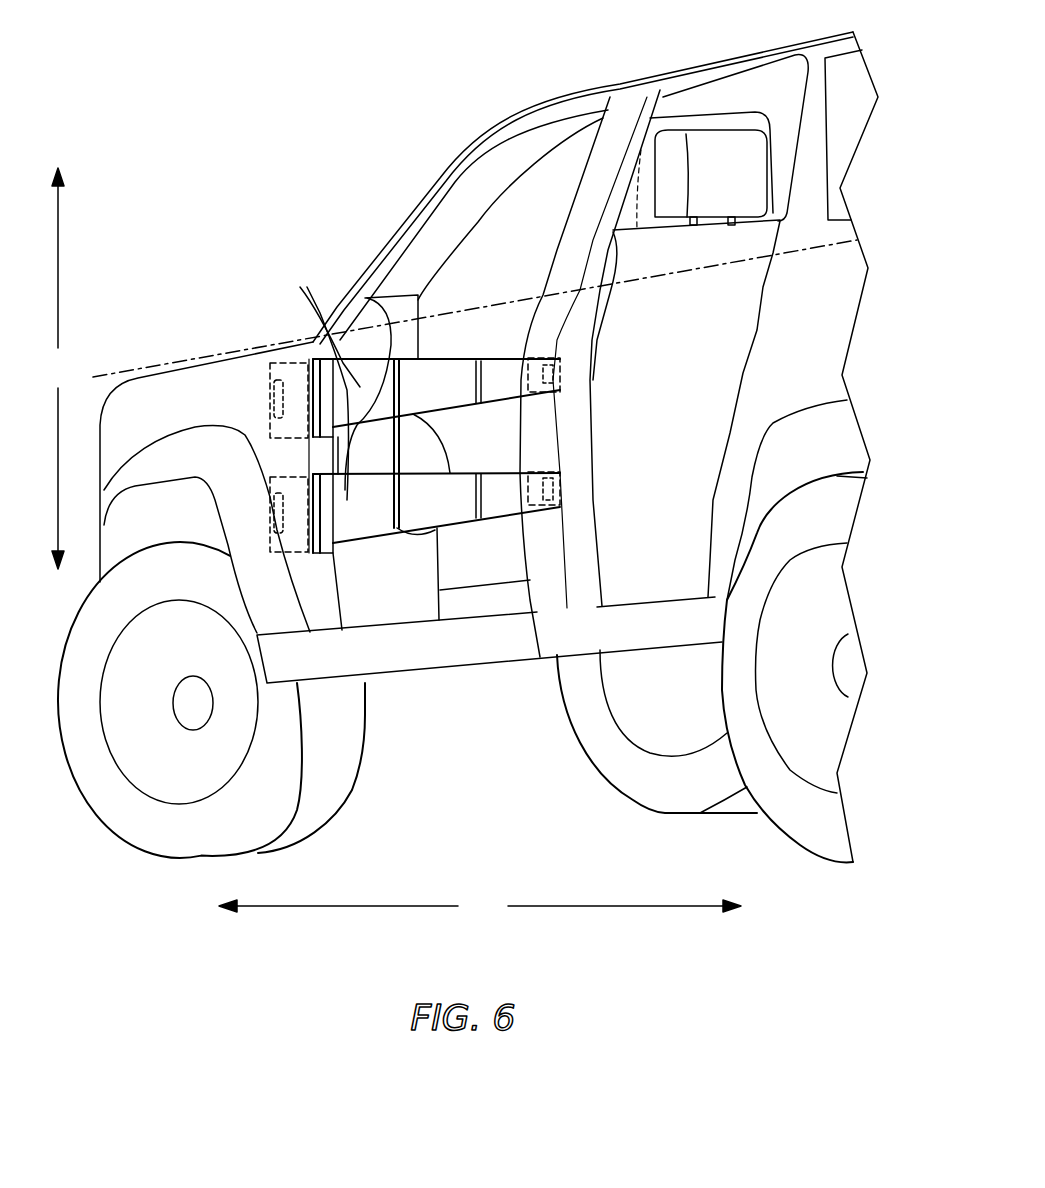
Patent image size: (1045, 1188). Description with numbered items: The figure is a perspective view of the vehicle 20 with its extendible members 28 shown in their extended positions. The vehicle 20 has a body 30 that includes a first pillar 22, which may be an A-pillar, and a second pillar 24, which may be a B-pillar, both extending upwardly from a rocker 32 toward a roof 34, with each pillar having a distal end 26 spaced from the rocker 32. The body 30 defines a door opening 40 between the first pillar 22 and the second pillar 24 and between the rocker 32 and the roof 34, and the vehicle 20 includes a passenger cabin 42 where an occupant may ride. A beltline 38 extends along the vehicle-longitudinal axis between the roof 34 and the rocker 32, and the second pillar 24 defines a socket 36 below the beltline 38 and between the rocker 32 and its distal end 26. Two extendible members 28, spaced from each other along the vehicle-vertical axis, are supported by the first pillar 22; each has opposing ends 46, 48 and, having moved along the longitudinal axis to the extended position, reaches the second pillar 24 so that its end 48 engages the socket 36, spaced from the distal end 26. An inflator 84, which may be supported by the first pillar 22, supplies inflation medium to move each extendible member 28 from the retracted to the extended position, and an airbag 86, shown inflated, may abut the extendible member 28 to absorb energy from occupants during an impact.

The vehicle 20 is at (482, 58).
The first pillar 22 is at (322, 577).
The second pillar 24 is at (578, 486).
The distal end 26 is at (493, 138).
The extendible member 28 is at (323, 333).
The body 30 is at (828, 310).
The rocker 32 is at (463, 645).
The roof 34 is at (573, 93).
The socket 36 is at (565, 365).
The beltline 38 is at (140, 370).
The door opening 40 is at (440, 237).
The passenger cabin 42 is at (482, 185).
The end 46 is at (307, 434).
The end 48 is at (567, 385).
The inflator 84 is at (270, 398).
The airbag 86 is at (478, 287).